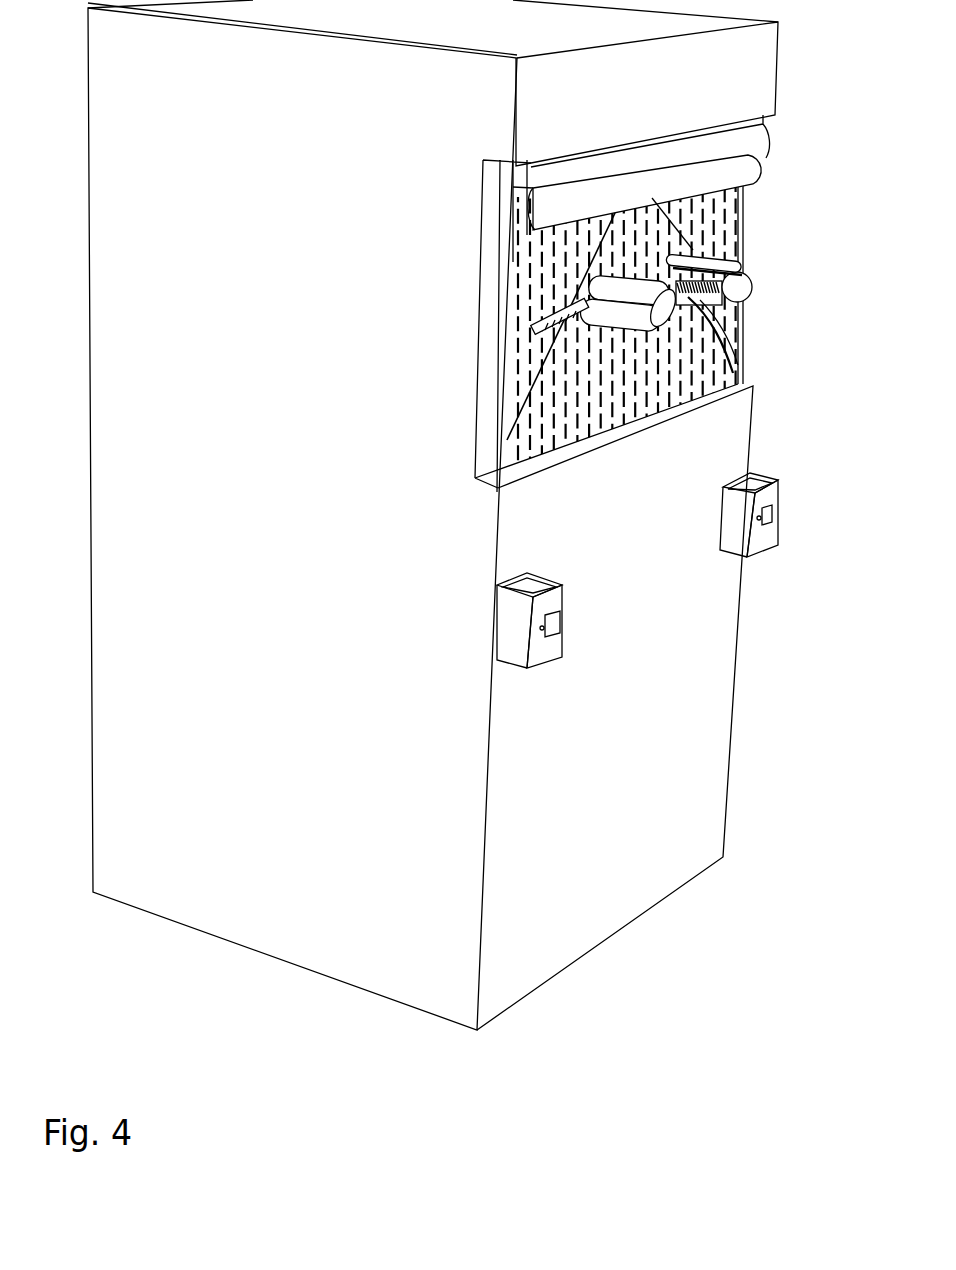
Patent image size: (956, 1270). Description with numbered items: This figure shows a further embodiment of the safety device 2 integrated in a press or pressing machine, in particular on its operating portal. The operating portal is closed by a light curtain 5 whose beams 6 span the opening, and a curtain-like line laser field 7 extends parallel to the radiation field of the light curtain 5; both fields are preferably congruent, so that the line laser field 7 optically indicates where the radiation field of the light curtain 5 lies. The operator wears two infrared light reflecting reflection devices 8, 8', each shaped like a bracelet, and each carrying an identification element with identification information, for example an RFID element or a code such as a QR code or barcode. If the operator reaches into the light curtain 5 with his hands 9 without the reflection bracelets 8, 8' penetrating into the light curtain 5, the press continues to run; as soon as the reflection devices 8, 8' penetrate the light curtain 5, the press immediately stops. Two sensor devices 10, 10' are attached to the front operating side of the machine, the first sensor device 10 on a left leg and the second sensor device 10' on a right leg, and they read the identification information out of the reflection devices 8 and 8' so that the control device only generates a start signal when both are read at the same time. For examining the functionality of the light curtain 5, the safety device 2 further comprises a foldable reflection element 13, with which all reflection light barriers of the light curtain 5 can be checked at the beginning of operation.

The safety device 2 is at (457, 216).
The light curtain 5 is at (572, 175).
The foldable reflection element 13 is at (730, 168).
The beams 6 is at (552, 257).
The line laser field 7 is at (507, 443).
The reflection device 8 is at (737, 342).
The reflection device 8' is at (740, 249).
The hands 9 is at (540, 328).
The sensor device 10 is at (575, 601).
The sensor device 10' is at (714, 513).